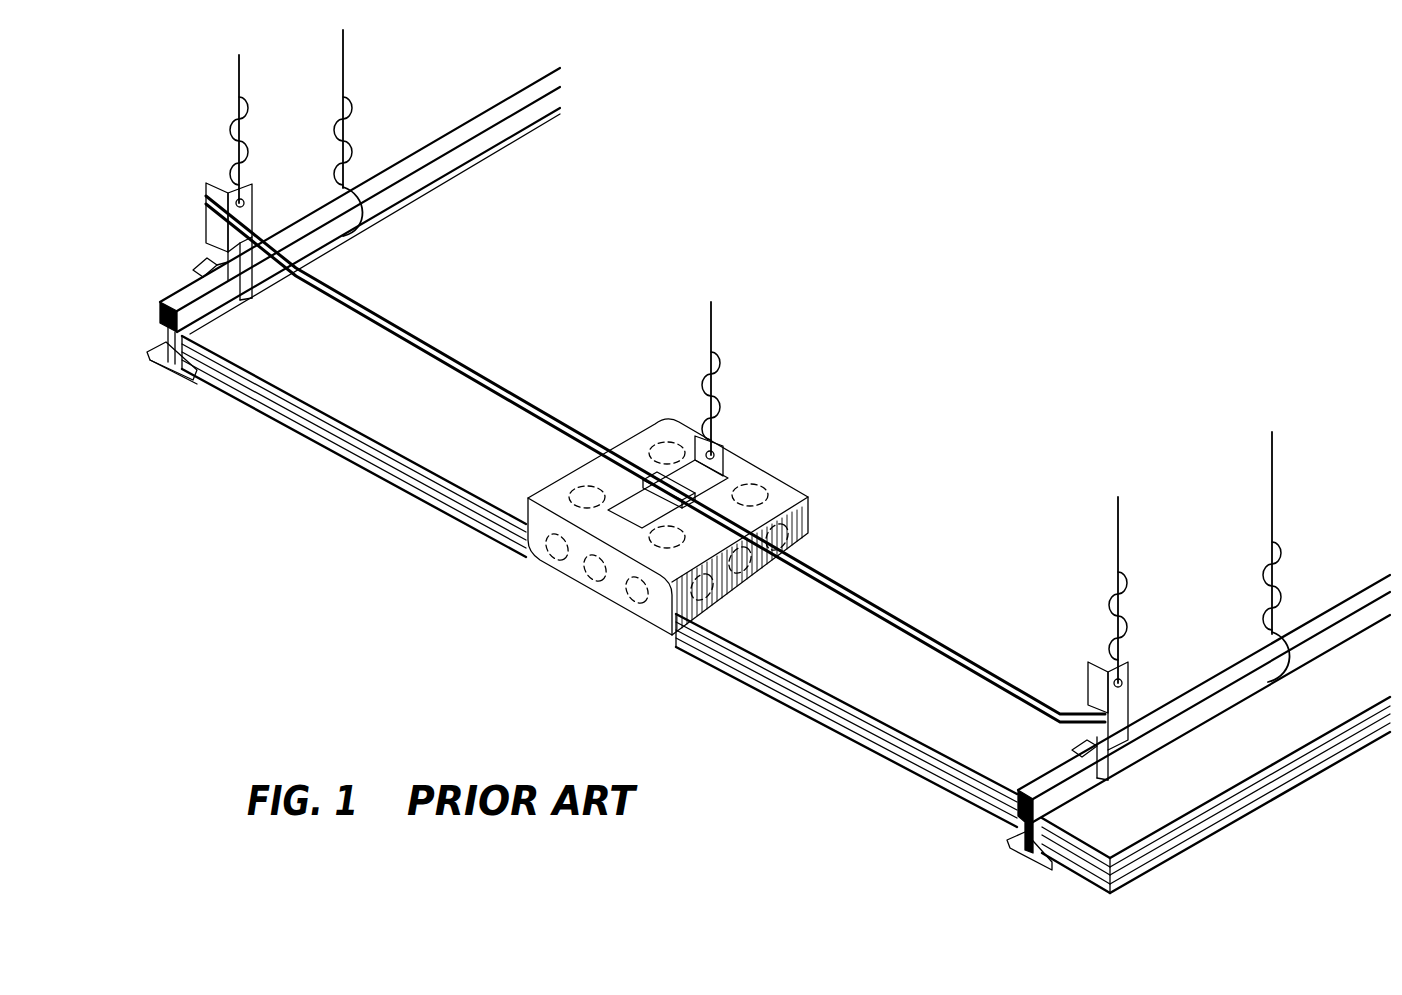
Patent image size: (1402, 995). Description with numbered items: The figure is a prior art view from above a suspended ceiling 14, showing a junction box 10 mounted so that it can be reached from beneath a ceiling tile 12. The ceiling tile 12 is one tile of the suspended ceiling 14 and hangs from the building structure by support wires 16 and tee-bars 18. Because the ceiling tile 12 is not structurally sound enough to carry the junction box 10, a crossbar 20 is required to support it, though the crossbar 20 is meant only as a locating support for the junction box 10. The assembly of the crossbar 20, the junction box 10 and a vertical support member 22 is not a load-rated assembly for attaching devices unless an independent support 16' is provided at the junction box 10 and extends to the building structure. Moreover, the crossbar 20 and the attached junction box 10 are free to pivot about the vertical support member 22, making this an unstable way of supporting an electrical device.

The junction box 10 is at (669, 507).
The ceiling tile 12 is at (599, 581).
The suspended ceiling 14 is at (1222, 757).
The support wires 16 is at (778, 356).
The independent support 16' is at (762, 378).
The tee-bars 18 is at (768, 470).
The crossbar 20 is at (655, 459).
The vertical support member 22 is at (660, 458).